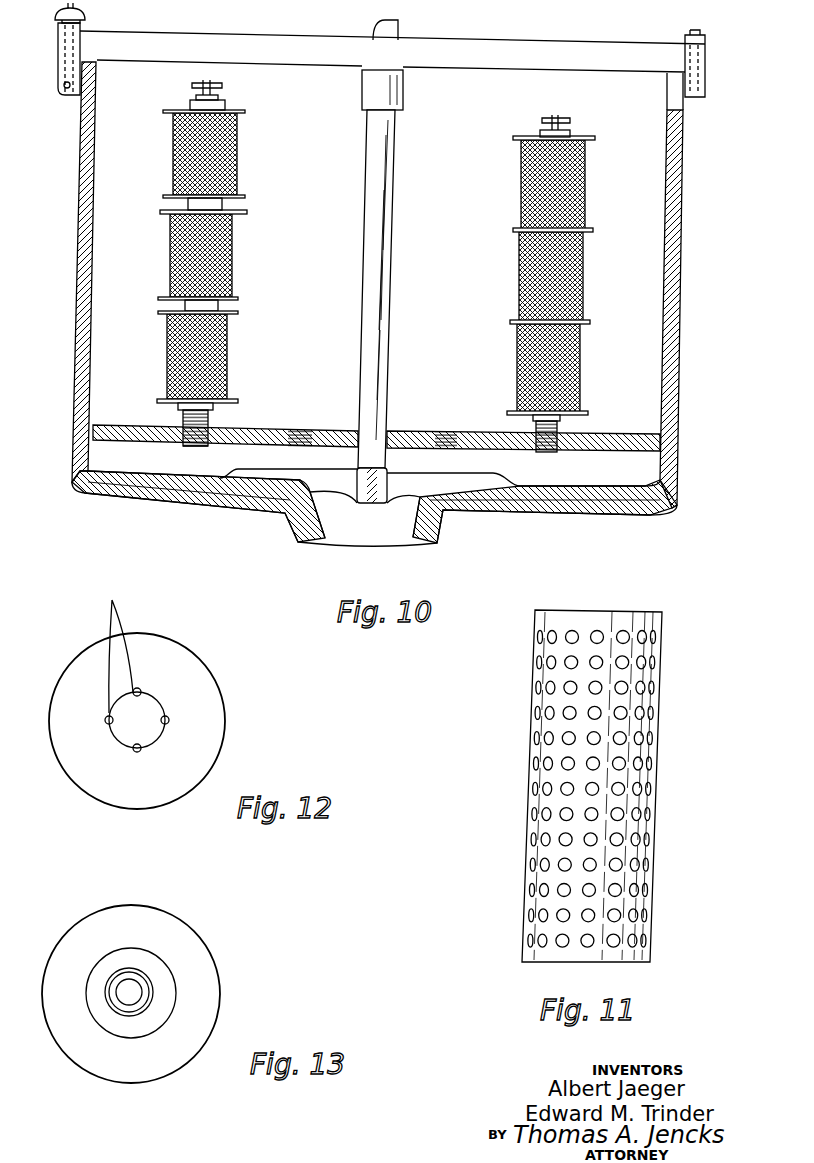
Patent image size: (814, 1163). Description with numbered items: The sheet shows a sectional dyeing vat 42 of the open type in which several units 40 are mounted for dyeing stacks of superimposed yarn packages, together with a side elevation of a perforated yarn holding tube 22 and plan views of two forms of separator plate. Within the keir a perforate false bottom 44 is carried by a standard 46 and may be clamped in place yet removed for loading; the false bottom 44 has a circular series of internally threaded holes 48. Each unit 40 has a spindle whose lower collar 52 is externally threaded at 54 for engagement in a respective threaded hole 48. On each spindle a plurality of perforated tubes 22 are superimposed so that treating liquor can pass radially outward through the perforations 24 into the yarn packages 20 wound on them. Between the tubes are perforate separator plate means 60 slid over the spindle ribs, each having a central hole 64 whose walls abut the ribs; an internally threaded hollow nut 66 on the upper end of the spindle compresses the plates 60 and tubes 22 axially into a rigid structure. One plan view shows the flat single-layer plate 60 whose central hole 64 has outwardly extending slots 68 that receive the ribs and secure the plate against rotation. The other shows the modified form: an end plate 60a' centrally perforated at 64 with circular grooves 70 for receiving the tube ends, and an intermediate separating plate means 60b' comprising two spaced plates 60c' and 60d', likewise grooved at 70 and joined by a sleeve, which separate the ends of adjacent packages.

In FIG. 10, the filter coil element 20 is at (238, 152).
In FIG. 11, the perforated yarn holding tube 22 is at (662, 614).
In FIG. 11, the perforations 24 is at (646, 688).
In FIG. 10, the unit 40 is at (260, 178).
In FIG. 10, the vat 42 is at (680, 222).
In FIG. 10, the perforate false bottom 44 is at (400, 432).
In FIG. 10, the standard 46 is at (393, 232).
In FIG. 10, the internally threaded holes 48 is at (210, 426).
In FIG. 10, the collar 52 is at (178, 412).
In FIG. 10, the external thread 54 is at (186, 442).
In FIG. 10, the perforate separator plate means 60 is at (514, 322).
In FIG. 12, the perforate separator plate means 60 is at (210, 690).
In FIG. 13, the perforate separator plate means 60 is at (208, 992).
In FIG. 10, the end separator plate 60a' is at (232, 118).
In FIG. 10, the intermediate separating plate means 60b' is at (227, 256).
In FIG. 10, the spaced plate 60c' is at (177, 292).
In FIG. 10, the spaced plate 60d' is at (175, 357).
In FIG. 12, the central hole 64 is at (122, 733).
In FIG. 13, the central hole 64 is at (136, 989).
In FIG. 10, the hollow nut 66 is at (214, 92).
In FIG. 12, the slots 68 is at (109, 652).
In FIG. 13, the circular grooves 70 is at (118, 973).